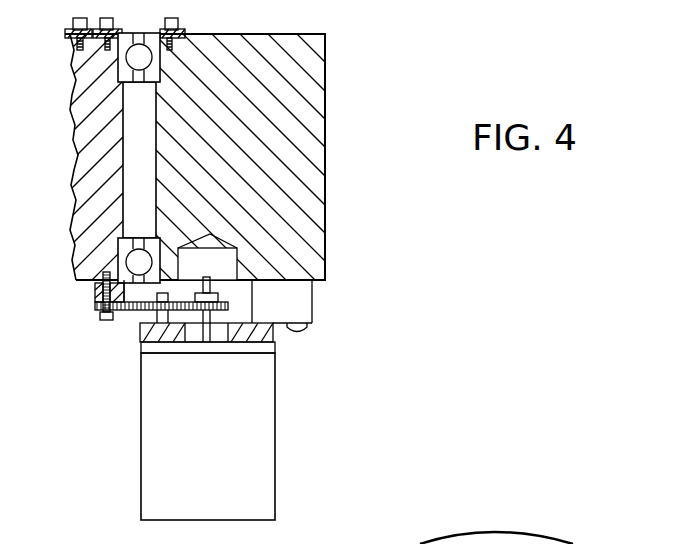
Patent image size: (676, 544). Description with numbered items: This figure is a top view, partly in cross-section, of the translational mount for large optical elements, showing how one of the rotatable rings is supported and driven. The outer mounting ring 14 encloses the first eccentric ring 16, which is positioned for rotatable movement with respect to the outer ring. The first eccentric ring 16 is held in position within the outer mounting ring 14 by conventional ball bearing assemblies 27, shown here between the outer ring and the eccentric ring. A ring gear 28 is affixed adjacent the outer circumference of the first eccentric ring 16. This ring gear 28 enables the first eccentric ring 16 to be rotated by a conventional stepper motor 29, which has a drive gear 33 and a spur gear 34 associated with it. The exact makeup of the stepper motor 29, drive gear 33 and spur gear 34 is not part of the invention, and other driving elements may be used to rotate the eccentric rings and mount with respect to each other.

The outer mounting ring 14 is at (217, 50).
The first eccentric ring 16 is at (88, 156).
The ball bearing assemblies 27 is at (125, 83).
The ring gears 28 is at (128, 318).
The stepper motor 29 is at (257, 452).
The drive gear 33 is at (218, 312).
The spur gear 34 is at (196, 312).